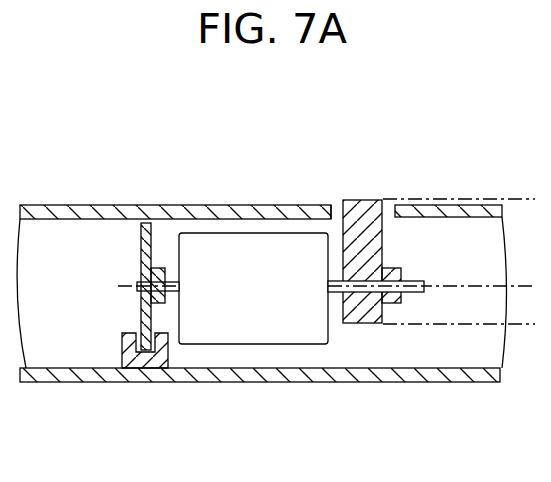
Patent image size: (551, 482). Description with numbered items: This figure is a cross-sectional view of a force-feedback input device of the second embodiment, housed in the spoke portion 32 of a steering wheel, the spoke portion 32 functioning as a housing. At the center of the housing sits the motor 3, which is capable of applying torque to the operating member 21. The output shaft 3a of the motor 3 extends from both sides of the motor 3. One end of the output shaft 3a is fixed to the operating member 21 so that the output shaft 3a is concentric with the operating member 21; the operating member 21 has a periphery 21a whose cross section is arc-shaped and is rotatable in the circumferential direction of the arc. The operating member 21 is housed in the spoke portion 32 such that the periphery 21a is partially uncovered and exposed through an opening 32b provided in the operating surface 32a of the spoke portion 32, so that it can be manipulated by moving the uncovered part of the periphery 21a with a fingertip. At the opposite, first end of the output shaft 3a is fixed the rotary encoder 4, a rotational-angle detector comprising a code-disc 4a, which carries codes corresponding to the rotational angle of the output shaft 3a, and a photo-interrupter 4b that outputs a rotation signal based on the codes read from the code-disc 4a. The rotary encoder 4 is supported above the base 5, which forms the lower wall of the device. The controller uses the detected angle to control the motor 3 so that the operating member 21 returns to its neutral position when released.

The motor 3 is at (258, 233).
The output shaft 3a is at (417, 280).
The rotary encoder 4 is at (86, 341).
The code-disc 4a is at (141, 261).
The photo-interrupter 4b is at (122, 347).
The base 5 is at (310, 381).
The operating member 21 is at (365, 187).
The periphery 21a is at (381, 202).
The spoke portion 32 is at (189, 171).
The operating surface 32a is at (212, 205).
The opening 32b is at (333, 205).